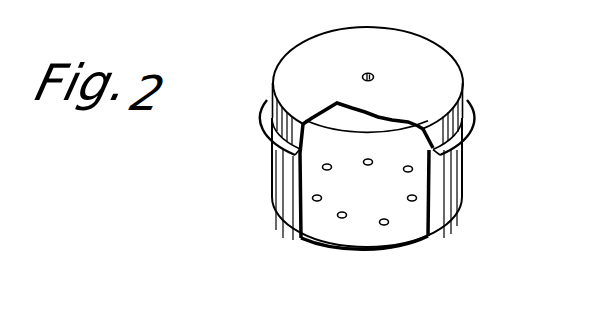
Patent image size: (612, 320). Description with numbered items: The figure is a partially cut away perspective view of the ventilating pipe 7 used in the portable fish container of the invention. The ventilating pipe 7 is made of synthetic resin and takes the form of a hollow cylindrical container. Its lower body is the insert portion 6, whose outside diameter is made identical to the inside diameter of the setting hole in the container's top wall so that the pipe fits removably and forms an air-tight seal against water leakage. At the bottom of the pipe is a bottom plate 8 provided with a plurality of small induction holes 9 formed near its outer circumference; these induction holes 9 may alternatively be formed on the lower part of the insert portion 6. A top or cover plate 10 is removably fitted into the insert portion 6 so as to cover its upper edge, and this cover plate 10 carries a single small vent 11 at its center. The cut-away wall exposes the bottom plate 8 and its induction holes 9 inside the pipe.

The insert portion 6 is at (448, 187).
The ventilating pipe 7 is at (470, 52).
The bottom plate 8 is at (338, 227).
The induction holes 9 is at (385, 225).
The cover plate 10 is at (400, 44).
The vent 11 is at (366, 68).